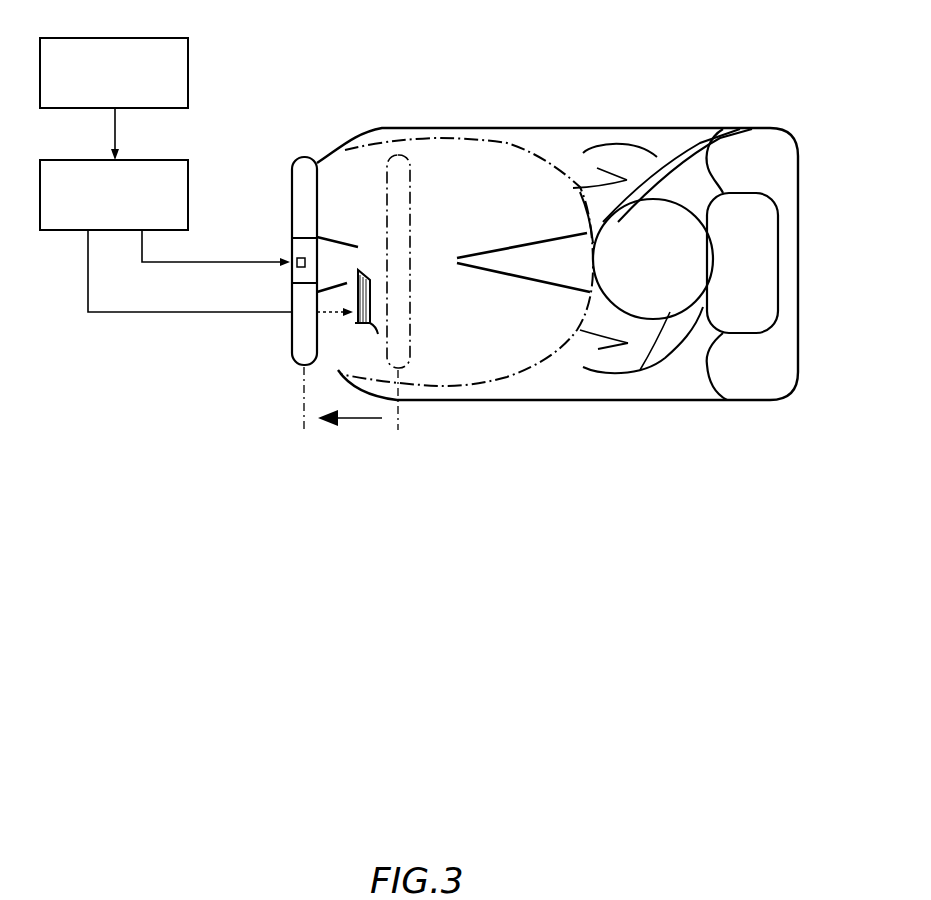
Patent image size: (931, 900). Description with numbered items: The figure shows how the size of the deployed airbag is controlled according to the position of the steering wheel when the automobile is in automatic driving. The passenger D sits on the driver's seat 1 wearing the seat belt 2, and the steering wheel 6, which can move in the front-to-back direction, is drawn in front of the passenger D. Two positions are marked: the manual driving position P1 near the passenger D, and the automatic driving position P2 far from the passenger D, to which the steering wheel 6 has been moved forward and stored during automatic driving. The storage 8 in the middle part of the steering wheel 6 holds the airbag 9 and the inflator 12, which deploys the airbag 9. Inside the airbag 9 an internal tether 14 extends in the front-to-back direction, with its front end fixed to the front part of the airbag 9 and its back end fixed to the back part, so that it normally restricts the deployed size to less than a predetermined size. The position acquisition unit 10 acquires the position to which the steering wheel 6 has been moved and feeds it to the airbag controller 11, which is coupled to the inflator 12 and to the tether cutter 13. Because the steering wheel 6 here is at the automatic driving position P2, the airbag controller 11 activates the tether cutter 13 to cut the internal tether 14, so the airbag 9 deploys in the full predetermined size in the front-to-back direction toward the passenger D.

The driver's seat 1 is at (800, 178).
The seat belt 2 is at (680, 133).
The steering wheel 6 is at (292, 170).
The storage 8 is at (292, 222).
The airbag 9 is at (507, 142).
The position acquisition unit 10 is at (93, 37).
The airbag controller 11 is at (92, 158).
The inflator 12 is at (293, 244).
The tether cutter 13 is at (378, 330).
The internal tether 14 is at (528, 281).
The passenger D is at (643, 320).
The manual driving position P1 is at (401, 308).
The automatic driving position P2 is at (310, 414).